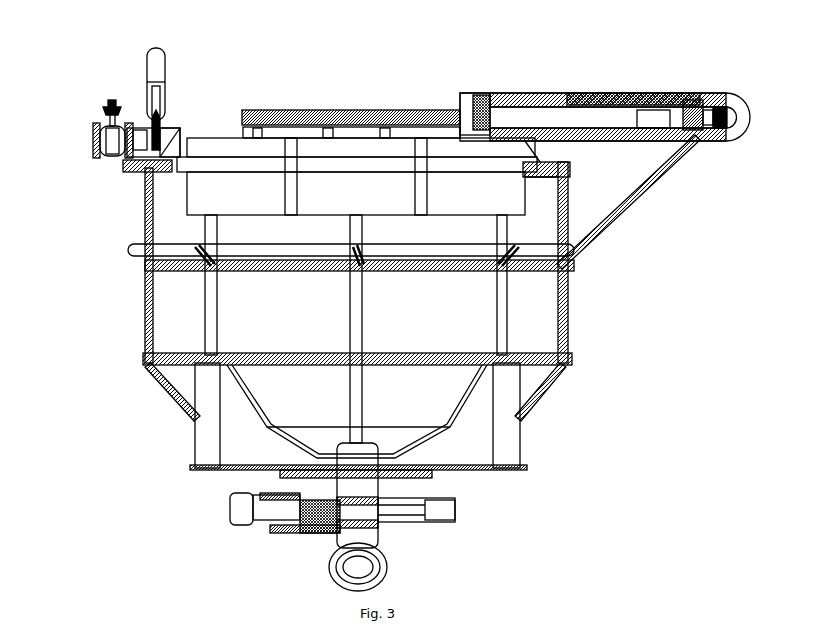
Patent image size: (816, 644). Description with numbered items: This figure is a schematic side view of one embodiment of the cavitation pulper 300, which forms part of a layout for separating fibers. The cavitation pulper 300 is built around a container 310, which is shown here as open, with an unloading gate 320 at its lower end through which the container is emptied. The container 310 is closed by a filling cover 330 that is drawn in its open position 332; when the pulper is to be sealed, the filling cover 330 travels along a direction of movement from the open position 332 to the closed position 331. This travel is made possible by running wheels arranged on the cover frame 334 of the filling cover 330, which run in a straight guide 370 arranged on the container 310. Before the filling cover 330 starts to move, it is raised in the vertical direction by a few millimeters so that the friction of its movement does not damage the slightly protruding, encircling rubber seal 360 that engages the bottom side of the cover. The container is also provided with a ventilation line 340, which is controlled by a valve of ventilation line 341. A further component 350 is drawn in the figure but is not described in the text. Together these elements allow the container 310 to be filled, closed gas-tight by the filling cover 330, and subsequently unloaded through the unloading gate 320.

The cavitation pulper 300 is at (627, 422).
The container 310 is at (568, 295).
The unloading gate 320 is at (377, 542).
The filling cover 330 is at (476, 91).
The closed position 331 is at (242, 122).
The open position 332 is at (743, 93).
The cover frame 334 is at (632, 92).
The ventilation line 340 is at (92, 148).
The valve of ventilation line 341 is at (147, 83).
The support strut 350 is at (723, 143).
The rubber seal 360 is at (343, 110).
The straight guide 370 is at (237, 120).